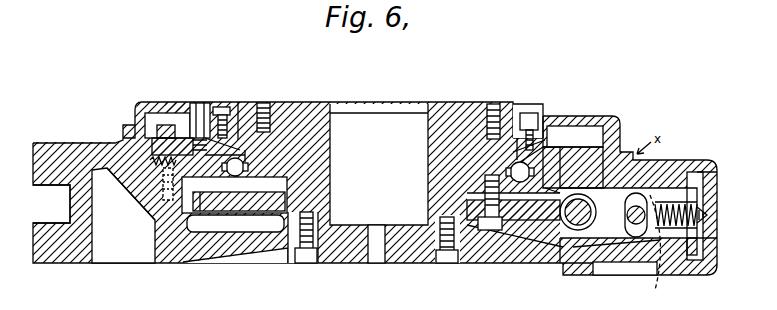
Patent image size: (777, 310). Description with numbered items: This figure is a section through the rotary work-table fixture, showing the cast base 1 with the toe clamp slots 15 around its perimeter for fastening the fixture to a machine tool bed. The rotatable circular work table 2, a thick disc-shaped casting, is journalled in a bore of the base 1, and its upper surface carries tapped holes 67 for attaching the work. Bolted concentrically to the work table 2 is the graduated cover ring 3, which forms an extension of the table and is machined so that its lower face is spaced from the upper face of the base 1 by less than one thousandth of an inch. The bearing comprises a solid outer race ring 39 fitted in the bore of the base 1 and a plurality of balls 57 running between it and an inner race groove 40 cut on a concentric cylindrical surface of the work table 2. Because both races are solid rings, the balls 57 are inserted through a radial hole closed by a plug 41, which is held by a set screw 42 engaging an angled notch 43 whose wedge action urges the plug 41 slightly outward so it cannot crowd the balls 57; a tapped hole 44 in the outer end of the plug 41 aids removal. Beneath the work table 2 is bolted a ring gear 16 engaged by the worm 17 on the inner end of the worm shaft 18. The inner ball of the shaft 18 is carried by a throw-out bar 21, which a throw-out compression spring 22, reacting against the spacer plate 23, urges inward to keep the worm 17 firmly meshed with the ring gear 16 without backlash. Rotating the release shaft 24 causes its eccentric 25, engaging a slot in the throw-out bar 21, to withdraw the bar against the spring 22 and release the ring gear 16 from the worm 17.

The cast base 1 is at (68, 143).
The work table 2 is at (457, 110).
The graduated cover ring 3 is at (596, 117).
The toe clamp slots 15 is at (43, 223).
The ring gear 16 is at (535, 213).
The worm 17 is at (572, 190).
The work table worm shaft 18 is at (578, 230).
The throw-out bar 21 is at (627, 192).
The throw-out compression spring 22 is at (717, 221).
The spacer plate 23 is at (717, 191).
The release shaft 24 is at (658, 251).
The eccentric 25 is at (634, 236).
The outer race ring 39 is at (567, 150).
The inner race groove 40 is at (517, 120).
The plug 41 is at (153, 228).
The set screw 42 is at (190, 125).
The notch 43 is at (213, 110).
The tapped hole 44 is at (133, 189).
The balls 57 is at (244, 167).
The tapped holes 67 is at (266, 108).